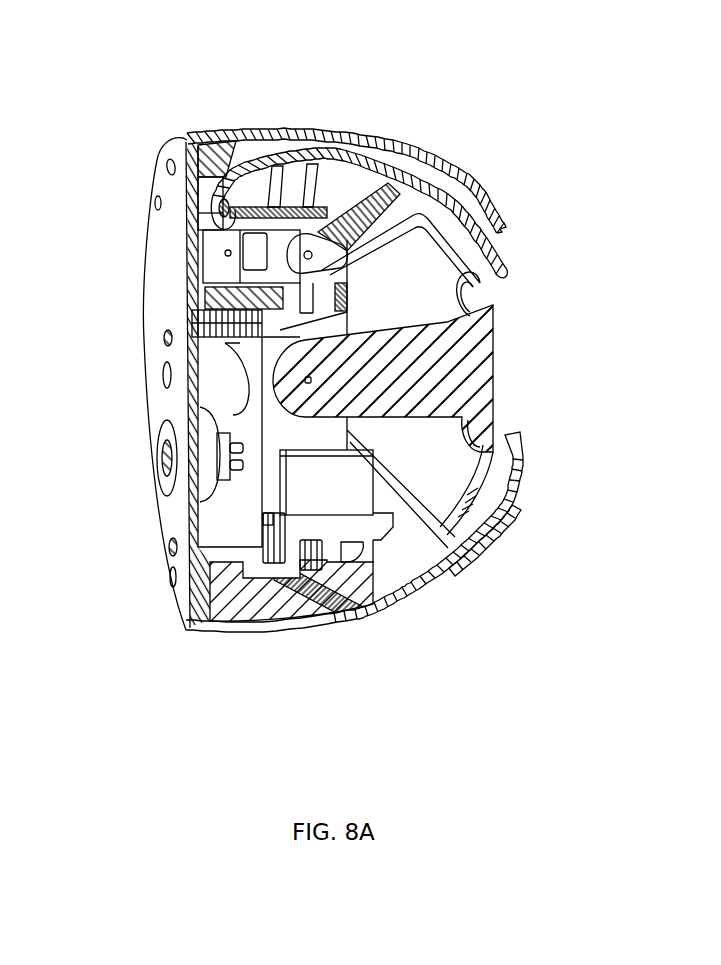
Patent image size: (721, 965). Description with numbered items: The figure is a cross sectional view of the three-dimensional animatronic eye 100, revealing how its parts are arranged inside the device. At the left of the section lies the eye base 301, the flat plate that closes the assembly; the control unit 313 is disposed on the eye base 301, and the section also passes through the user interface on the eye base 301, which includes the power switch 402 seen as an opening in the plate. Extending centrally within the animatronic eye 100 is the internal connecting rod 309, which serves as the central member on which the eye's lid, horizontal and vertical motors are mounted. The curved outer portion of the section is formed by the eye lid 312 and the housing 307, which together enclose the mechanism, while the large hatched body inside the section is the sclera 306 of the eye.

The 3D animatronic eye 100 is at (535, 102).
The eye base 301 is at (175, 290).
The sclera 306 is at (483, 357).
The housing 307 is at (487, 547).
The internal connecting rod 309 is at (275, 428).
The eye lid 312 is at (343, 203).
The control unit 313 is at (223, 323).
The power switch 402 is at (160, 452).